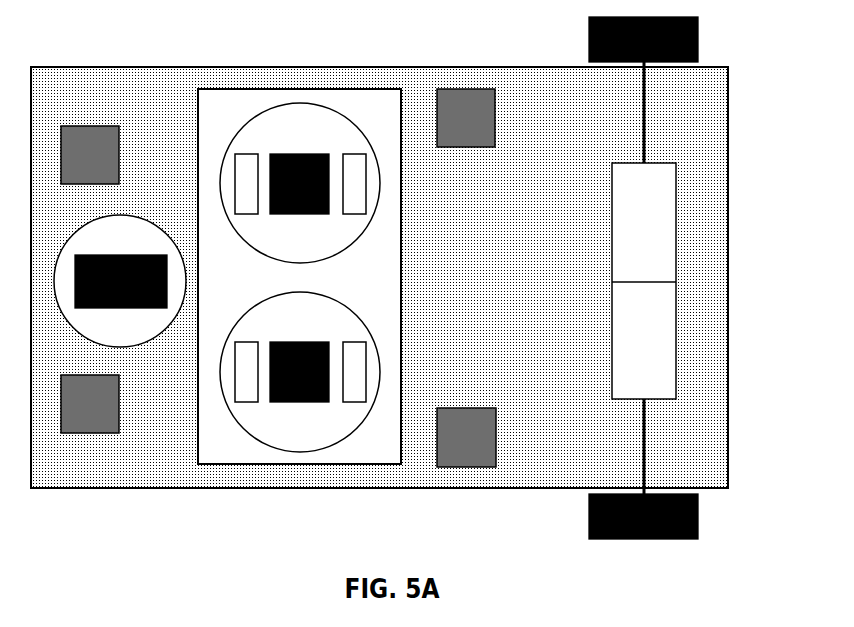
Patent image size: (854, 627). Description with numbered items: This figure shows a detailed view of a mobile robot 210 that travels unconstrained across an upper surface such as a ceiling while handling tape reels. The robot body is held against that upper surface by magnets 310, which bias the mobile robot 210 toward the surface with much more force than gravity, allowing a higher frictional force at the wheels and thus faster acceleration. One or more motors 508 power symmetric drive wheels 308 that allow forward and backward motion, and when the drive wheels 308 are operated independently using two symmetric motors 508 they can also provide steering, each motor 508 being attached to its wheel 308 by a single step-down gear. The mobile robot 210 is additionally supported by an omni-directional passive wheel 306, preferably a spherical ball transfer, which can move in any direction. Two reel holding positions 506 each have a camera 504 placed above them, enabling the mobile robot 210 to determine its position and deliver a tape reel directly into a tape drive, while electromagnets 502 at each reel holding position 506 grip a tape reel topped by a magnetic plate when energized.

The mobile robot 210 is at (61, 57).
The omni-directional passive wheel 306 is at (134, 255).
The drive wheel 308 is at (700, 32).
The magnet 310 is at (462, 100).
The electromagnet 502 is at (354, 177).
The camera 504 is at (290, 155).
The reel holding position 506 is at (271, 135).
The motor 508 is at (648, 225).